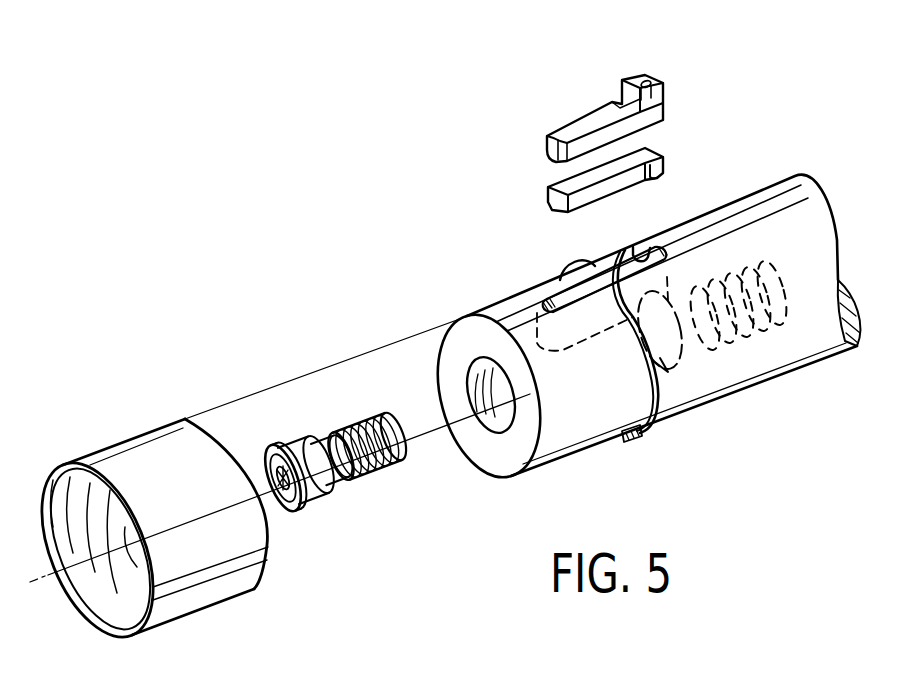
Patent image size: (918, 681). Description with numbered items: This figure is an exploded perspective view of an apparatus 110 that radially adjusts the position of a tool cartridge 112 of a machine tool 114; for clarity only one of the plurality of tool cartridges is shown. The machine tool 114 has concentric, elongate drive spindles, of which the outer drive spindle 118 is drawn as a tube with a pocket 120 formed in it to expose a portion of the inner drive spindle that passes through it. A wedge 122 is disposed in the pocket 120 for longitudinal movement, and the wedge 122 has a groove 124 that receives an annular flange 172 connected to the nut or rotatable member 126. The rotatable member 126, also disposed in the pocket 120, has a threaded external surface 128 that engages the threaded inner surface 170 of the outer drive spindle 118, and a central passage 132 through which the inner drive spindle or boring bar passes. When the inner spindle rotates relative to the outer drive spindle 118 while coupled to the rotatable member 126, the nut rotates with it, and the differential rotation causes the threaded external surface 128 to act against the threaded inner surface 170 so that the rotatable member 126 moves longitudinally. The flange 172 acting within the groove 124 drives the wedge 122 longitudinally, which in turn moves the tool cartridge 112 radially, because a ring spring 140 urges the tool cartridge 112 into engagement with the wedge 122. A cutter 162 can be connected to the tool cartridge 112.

The apparatus 110 is at (305, 312).
The tool cartridge 112 is at (612, 102).
The machine tool 114 is at (783, 38).
The outer drive spindle 118 is at (500, 319).
The pocket 120 is at (622, 255).
The wedge 122 is at (548, 193).
The groove 124 is at (635, 248).
The rotatable member (nut) 126 is at (347, 430).
The threaded external surface 128 is at (396, 458).
The central passage 132 is at (267, 460).
The ring spring 140 is at (147, 450).
The cutter 162 is at (648, 86).
The threaded inner surface 170 is at (740, 313).
The annular flange 172 is at (316, 503).